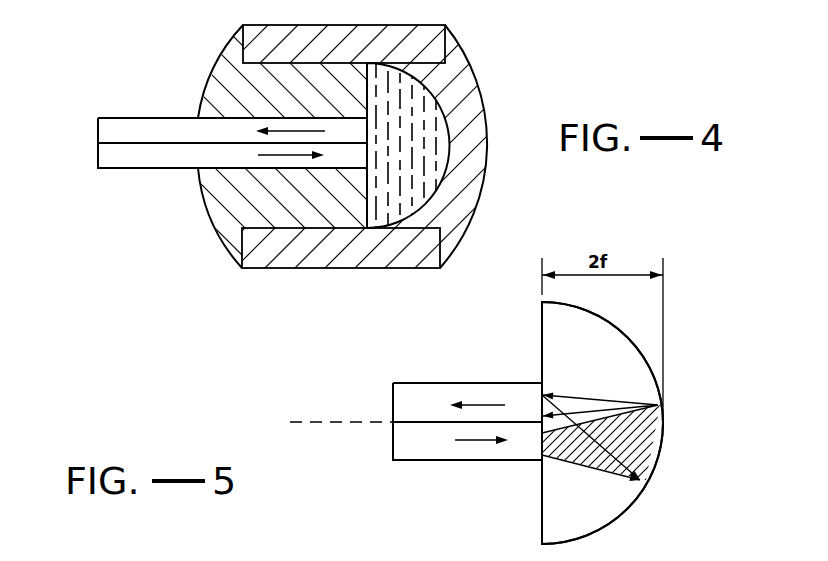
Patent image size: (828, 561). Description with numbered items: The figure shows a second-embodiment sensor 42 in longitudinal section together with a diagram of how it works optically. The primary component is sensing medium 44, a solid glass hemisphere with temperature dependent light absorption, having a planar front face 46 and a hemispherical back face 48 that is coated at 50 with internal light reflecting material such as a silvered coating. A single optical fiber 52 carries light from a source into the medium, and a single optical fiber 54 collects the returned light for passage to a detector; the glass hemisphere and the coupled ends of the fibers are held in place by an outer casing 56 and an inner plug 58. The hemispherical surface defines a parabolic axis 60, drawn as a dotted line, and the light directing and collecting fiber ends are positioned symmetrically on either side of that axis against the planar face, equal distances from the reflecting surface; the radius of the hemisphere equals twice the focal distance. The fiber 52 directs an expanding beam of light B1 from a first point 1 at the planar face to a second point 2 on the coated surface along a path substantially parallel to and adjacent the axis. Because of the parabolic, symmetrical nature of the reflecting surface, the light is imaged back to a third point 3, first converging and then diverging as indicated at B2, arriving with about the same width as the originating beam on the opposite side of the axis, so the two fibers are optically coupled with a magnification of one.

In FIG. 4, the sensor 42 is at (386, 170).
In FIG. 4, the sensing medium 44 is at (395, 232).
In FIG. 5, the planar front face 46 is at (541, 340).
In FIG. 4, the hemispherical back face 48 is at (420, 185).
In FIG. 5, the hemispherical back face 48 is at (541, 521).
In FIG. 4, the coating 50 is at (435, 105).
In FIG. 5, the coating 50 is at (627, 492).
In FIG. 4, the optical fiber 52 is at (162, 157).
In FIG. 5, the optical fiber 52 is at (443, 450).
In FIG. 4, the optical fiber 54 is at (142, 127).
In FIG. 5, the optical fiber 54 is at (440, 389).
In FIG. 4, the outer casing 56 is at (467, 190).
In FIG. 4, the inner plug 58 is at (223, 220).
In FIG. 5, the parabolic axis 60 is at (332, 420).
In FIG. 5, the first point 1 is at (540, 452).
In FIG. 5, the second point 2 is at (660, 450).
In FIG. 5, the third point 3 is at (536, 394).
In FIG. 5, the expanding beam of light B1 is at (592, 458).
In FIG. 5, the imaged beam B2 is at (636, 428).